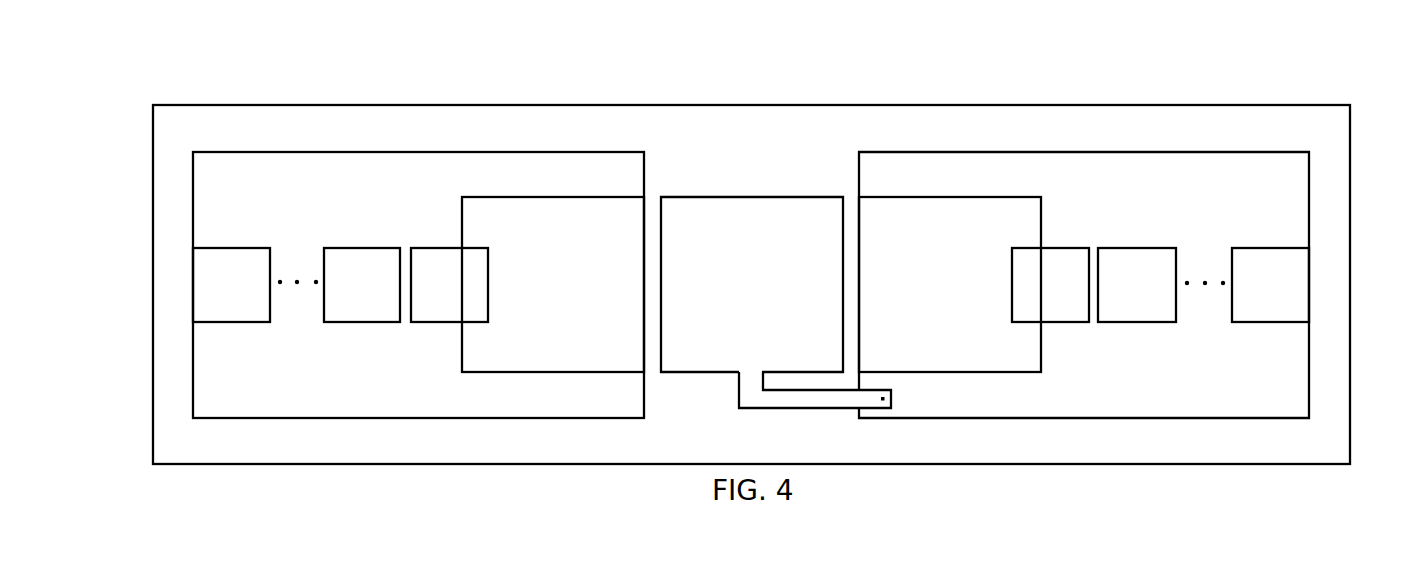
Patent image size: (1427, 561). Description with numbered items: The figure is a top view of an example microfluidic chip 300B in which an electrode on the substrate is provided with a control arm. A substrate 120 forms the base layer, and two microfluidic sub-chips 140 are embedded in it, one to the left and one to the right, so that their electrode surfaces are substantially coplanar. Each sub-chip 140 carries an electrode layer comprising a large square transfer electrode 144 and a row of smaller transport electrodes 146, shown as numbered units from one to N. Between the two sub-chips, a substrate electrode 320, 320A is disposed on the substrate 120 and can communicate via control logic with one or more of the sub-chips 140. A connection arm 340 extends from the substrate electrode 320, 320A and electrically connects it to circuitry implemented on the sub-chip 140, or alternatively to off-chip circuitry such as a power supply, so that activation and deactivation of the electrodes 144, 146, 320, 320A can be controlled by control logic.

The microfluidic chip 300B is at (199, 66).
The substrate 120 is at (154, 162).
The microfluidic sub-chip 140 is at (368, 152).
The transfer electrode 144 is at (553, 197).
The transport electrode 146 is at (220, 247).
The substrate electrode 320 is at (705, 221).
The substrate electrode 320A is at (735, 197).
The connection arm 340 is at (810, 409).